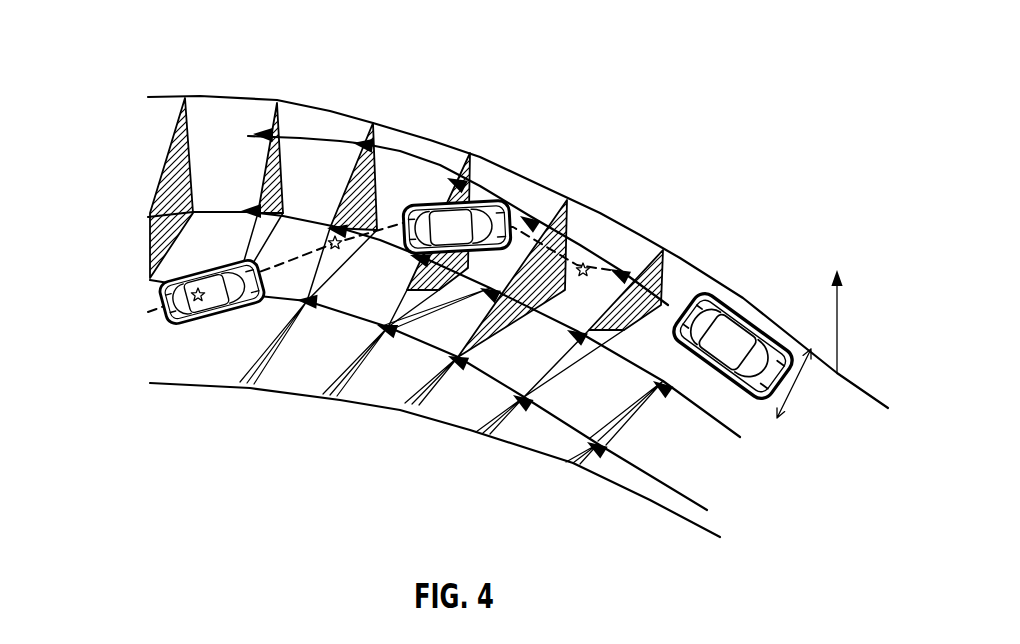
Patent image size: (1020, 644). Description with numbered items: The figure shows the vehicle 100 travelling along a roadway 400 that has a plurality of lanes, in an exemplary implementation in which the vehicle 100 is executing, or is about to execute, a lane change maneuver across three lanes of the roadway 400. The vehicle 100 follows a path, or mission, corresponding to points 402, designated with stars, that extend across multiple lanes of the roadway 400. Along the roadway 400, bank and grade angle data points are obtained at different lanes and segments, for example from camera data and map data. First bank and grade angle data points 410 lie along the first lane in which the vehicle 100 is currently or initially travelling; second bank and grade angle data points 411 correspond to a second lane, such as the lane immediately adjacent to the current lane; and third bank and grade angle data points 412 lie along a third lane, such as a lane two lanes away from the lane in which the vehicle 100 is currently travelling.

The roadway 400 is at (144, 40).
The vehicle 100 is at (498, 201).
The points 402 is at (584, 262).
The first bank and grade angle data points 410 is at (262, 131).
The second bank and grade angle data points 411 is at (423, 268).
The third bank and grade angle data points 412 is at (251, 210).